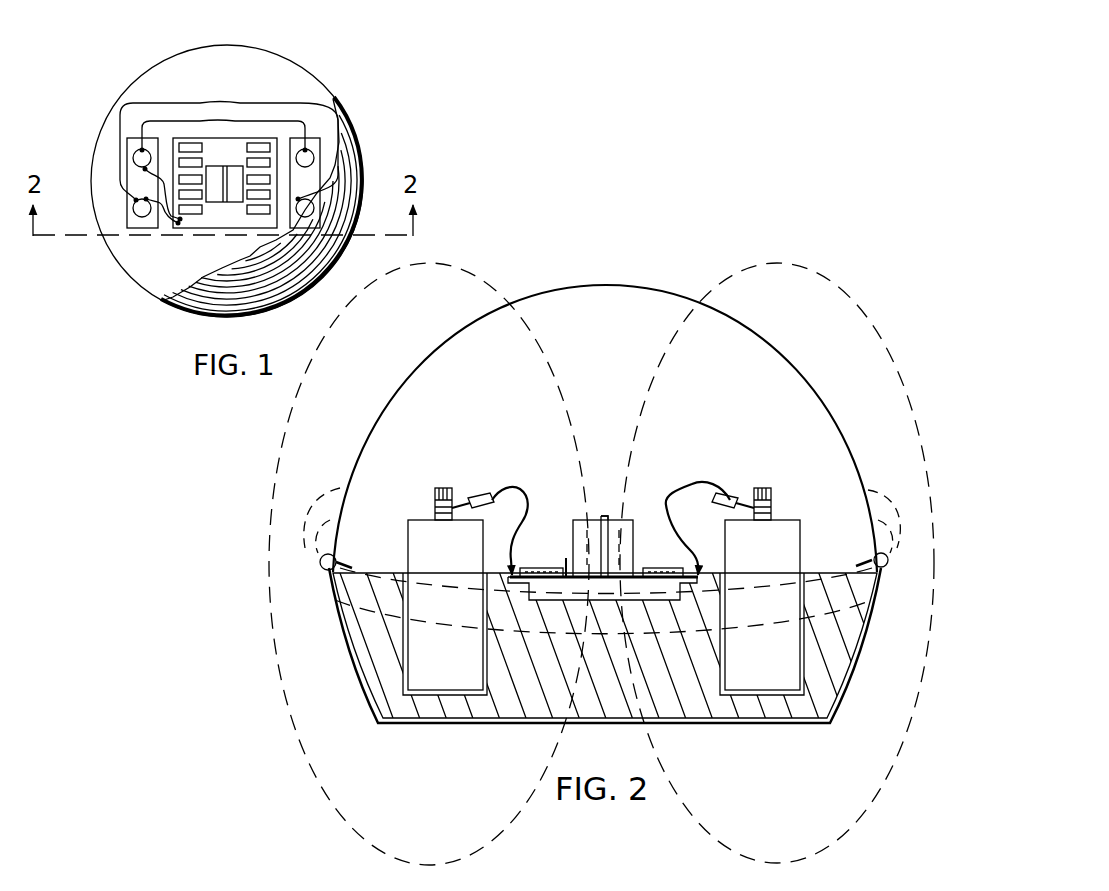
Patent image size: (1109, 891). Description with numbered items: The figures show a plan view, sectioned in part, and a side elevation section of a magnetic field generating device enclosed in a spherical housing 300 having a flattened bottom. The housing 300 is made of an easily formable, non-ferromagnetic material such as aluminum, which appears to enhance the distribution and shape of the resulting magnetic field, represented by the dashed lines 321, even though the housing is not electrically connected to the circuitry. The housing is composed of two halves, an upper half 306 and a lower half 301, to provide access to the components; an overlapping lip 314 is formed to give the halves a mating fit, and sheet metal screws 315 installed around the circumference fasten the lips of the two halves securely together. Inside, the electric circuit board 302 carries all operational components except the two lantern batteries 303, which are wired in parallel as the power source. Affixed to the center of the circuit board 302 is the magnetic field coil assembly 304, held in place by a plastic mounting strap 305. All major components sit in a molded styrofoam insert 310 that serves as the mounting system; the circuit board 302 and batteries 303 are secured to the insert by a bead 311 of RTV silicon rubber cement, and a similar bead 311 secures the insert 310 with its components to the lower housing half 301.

In FIG. 1, the spherical housing 300 is at (354, 163).
In FIG. 2, the spherical housing 300 is at (748, 726).
In FIG. 2, the lower housing half 301 is at (350, 675).
In FIG. 1, the electric circuit board 302 is at (227, 157).
In FIG. 2, the electric circuit board 302 is at (566, 558).
In FIG. 2, the lantern batteries 303 is at (418, 510).
In FIG. 1, the magnetic field coil assembly 304 is at (232, 178).
In FIG. 2, the magnetic field coil assembly 304 is at (592, 508).
In FIG. 2, the plastic mounting strap 305 is at (607, 512).
In FIG. 2, the upper housing half 306 is at (340, 472).
In FIG. 2, the molded styrofoam insert 310 is at (367, 620).
In FIG. 2, the bead of RTV silicon rubber cement 311 is at (400, 563).
In FIG. 2, the overlapping lip 314 is at (322, 573).
In FIG. 2, the sheet metal screws 315 is at (318, 556).
In FIG. 2, the magnetic field lines 321 is at (483, 273).